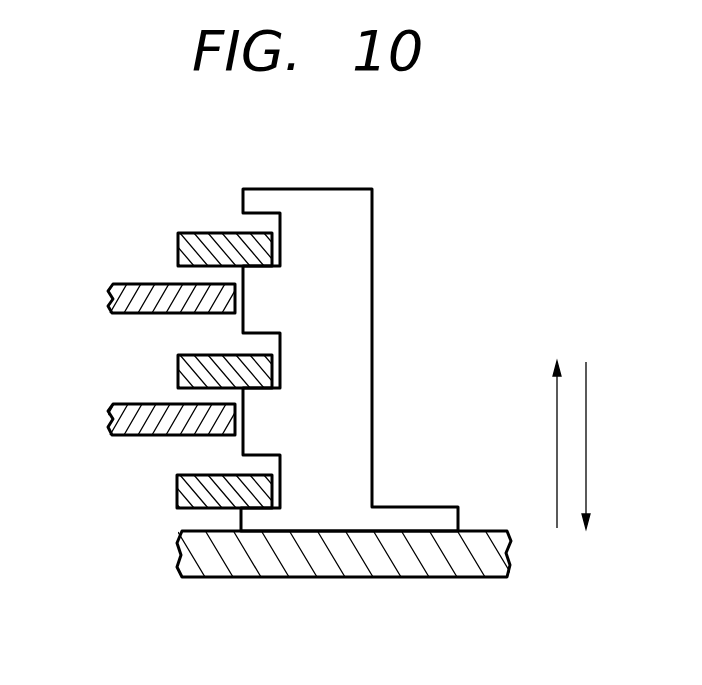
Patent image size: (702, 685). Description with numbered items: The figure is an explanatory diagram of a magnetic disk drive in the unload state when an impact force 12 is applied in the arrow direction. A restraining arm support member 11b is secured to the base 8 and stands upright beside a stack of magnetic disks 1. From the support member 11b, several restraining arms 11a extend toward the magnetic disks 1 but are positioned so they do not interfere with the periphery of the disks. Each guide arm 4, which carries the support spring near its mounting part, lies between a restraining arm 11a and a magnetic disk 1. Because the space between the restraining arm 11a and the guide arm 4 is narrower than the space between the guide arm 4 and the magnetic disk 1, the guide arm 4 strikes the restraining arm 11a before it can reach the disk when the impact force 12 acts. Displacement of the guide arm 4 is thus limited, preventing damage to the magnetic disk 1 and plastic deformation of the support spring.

The magnetic disk 1 is at (118, 295).
The guide arm 4 is at (188, 243).
The base 8 is at (492, 540).
The restraining arm 11a is at (258, 197).
The restraining arm support member 11b is at (355, 234).
The impact force 12 is at (566, 460).